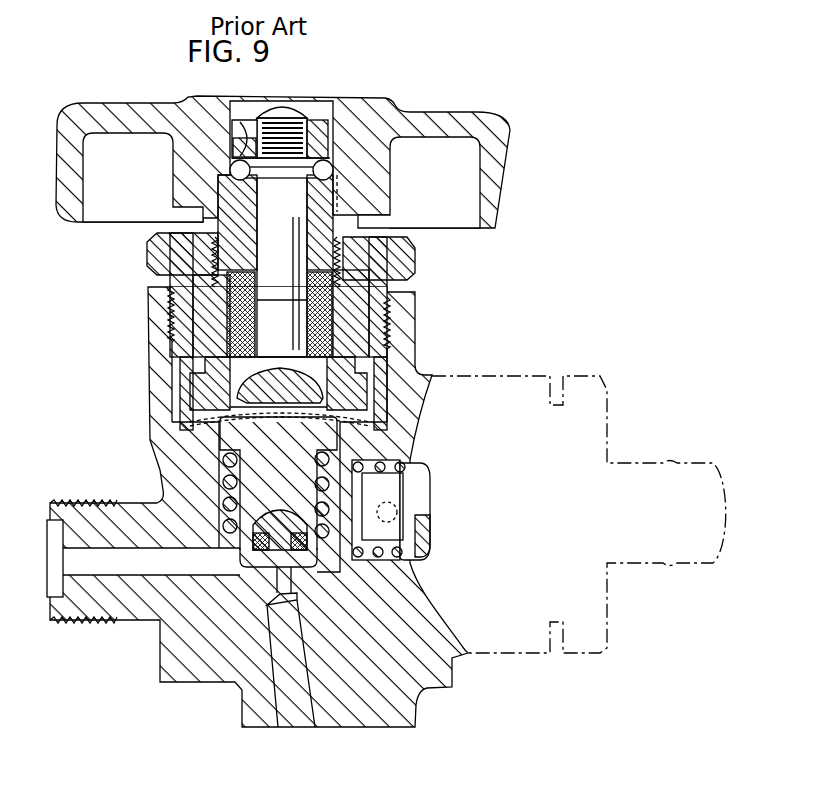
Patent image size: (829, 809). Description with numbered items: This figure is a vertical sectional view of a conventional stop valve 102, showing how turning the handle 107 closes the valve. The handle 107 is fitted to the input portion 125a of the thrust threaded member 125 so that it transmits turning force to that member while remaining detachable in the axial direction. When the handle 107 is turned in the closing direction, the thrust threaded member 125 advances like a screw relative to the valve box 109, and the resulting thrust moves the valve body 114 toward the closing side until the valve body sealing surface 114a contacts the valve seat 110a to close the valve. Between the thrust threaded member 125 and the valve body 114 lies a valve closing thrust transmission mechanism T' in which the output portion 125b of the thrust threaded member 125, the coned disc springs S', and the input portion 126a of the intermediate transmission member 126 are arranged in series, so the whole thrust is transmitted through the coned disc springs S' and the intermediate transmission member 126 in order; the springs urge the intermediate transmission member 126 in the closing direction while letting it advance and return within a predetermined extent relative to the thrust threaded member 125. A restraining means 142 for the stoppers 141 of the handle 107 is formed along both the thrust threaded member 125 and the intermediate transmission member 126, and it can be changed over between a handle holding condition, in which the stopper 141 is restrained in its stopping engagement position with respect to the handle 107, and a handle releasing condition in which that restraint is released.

The stop valve 102 is at (423, 305).
The handle 107 is at (509, 186).
The valve box 109 is at (417, 343).
The valve seat 110a is at (257, 568).
The valve body 114 is at (222, 510).
The valve body sealing surface 114a is at (296, 570).
The thrust threaded member 125 is at (210, 235).
The input portion 125a is at (236, 198).
The output portion 125b is at (150, 276).
The intermediate transmission member 126 is at (256, 193).
The input portion 126a is at (225, 400).
The stopper 141 is at (336, 169).
The restraining means 142 is at (326, 166).
The coned disc springs S' is at (222, 318).
The valve closing thrust transmission mechanism T' is at (245, 570).